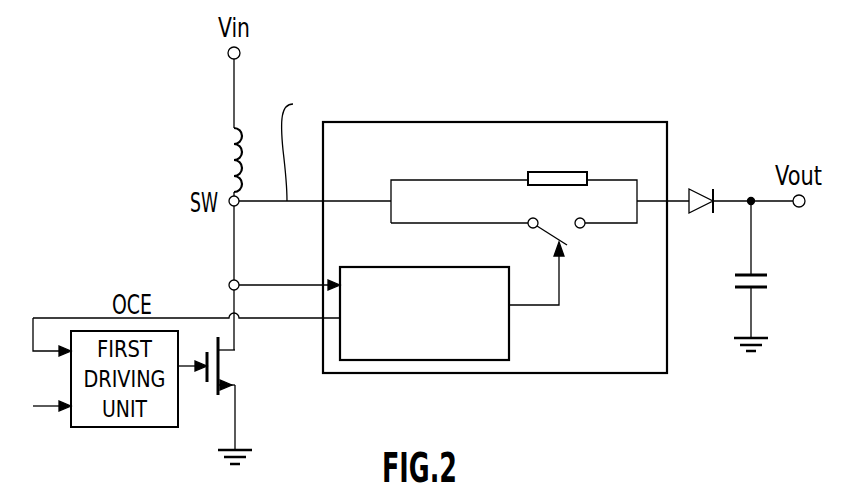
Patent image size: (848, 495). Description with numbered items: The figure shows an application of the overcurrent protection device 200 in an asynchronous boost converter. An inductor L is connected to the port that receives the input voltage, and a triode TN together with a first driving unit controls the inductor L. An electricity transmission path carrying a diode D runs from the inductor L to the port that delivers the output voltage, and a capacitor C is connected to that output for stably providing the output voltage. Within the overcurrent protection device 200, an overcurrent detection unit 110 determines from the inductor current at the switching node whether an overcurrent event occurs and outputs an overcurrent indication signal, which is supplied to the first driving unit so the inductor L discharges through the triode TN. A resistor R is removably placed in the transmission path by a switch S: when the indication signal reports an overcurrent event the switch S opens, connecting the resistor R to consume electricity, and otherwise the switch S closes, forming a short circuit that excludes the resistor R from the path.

The overcurrent protection device 200 is at (629, 122).
The overcurrent detection unit 110 is at (381, 267).
The inductor L is at (217, 160).
The resistor R is at (557, 163).
The switch S is at (563, 243).
The diode D is at (701, 178).
The capacitor C is at (766, 282).
The triode TN is at (237, 366).